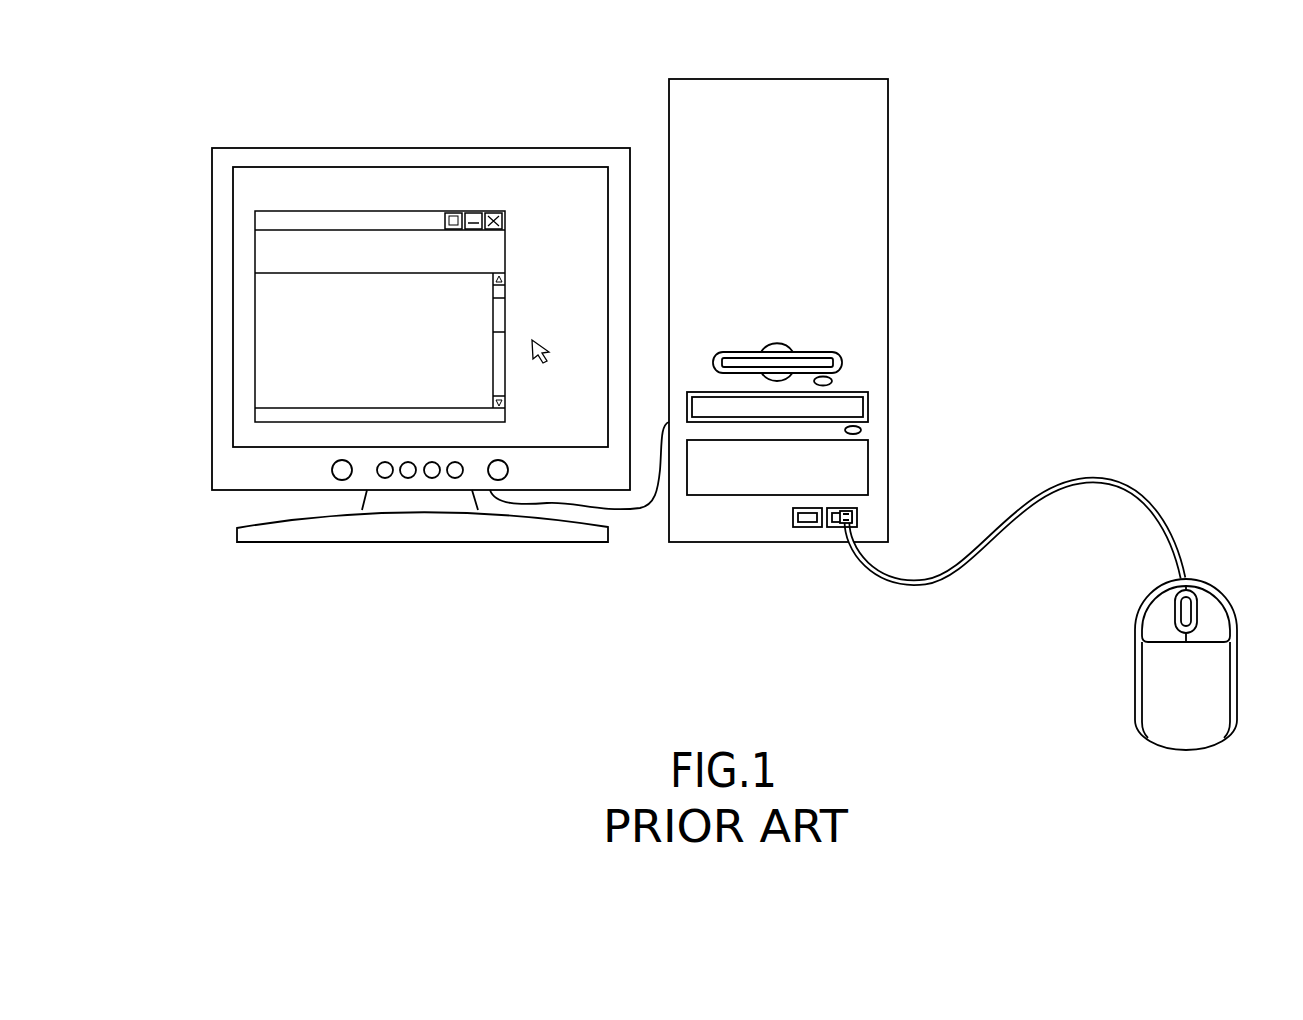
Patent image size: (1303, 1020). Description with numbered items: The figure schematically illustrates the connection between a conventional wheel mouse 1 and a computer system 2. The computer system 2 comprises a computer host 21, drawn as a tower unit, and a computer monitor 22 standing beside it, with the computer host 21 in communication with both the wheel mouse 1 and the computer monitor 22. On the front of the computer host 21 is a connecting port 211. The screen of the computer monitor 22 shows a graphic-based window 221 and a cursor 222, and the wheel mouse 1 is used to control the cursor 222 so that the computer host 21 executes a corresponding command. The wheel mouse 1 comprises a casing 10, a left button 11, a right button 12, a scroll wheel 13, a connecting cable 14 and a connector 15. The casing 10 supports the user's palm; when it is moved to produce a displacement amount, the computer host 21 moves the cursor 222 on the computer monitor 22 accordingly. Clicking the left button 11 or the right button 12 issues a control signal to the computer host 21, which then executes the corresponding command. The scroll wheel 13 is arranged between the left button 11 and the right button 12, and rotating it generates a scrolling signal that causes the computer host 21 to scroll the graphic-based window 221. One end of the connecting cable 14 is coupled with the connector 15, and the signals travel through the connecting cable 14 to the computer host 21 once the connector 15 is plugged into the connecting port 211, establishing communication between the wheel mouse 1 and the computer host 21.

The wheel mouse 1 is at (1112, 599).
The casing 10 is at (1213, 667).
The left button 11 is at (1158, 618).
The right button 12 is at (1212, 613).
The scroll wheel 13 is at (1185, 597).
The connecting cable 14 is at (1097, 480).
The connector 15 is at (852, 508).
The computer system 2 is at (695, 57).
The computer host 21 is at (782, 88).
The connecting port 211 is at (793, 527).
The computer monitor 22 is at (516, 148).
The graphic-based window 221 is at (337, 253).
The cursor 222 is at (553, 362).